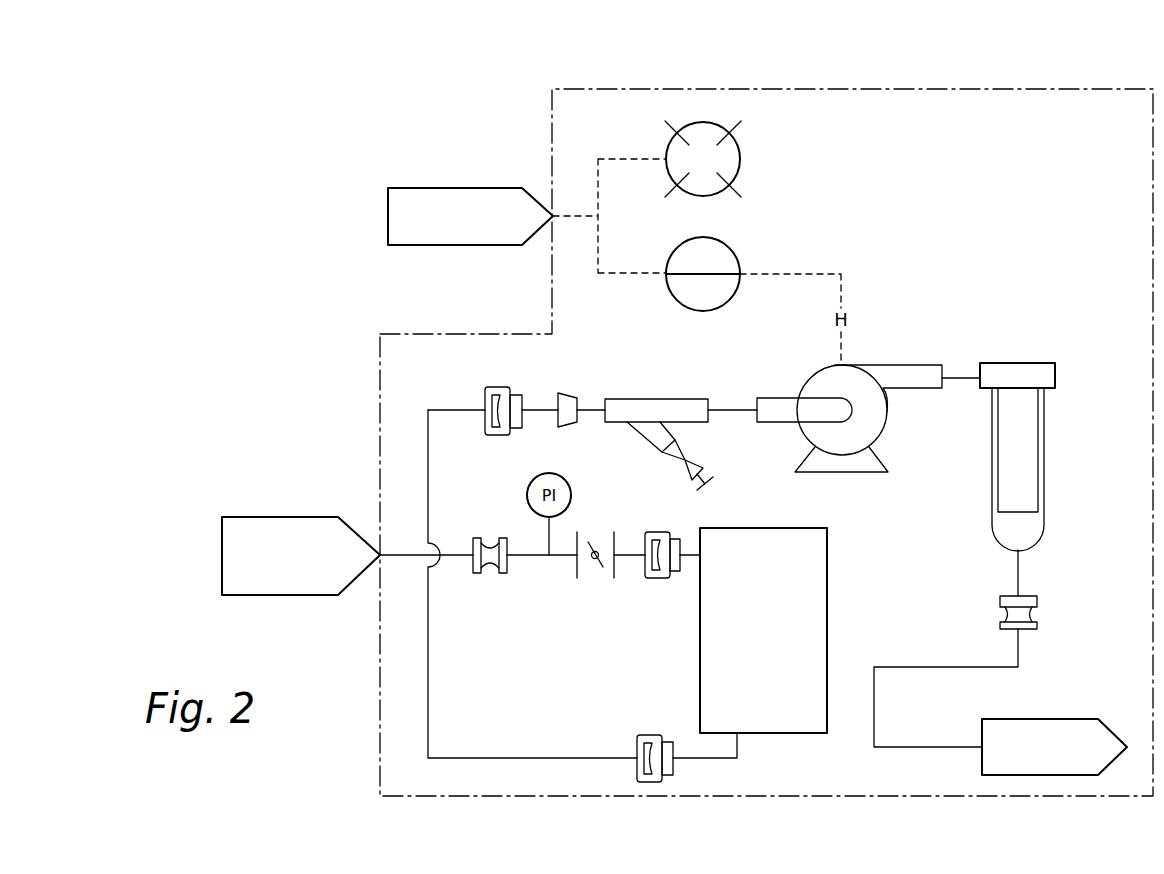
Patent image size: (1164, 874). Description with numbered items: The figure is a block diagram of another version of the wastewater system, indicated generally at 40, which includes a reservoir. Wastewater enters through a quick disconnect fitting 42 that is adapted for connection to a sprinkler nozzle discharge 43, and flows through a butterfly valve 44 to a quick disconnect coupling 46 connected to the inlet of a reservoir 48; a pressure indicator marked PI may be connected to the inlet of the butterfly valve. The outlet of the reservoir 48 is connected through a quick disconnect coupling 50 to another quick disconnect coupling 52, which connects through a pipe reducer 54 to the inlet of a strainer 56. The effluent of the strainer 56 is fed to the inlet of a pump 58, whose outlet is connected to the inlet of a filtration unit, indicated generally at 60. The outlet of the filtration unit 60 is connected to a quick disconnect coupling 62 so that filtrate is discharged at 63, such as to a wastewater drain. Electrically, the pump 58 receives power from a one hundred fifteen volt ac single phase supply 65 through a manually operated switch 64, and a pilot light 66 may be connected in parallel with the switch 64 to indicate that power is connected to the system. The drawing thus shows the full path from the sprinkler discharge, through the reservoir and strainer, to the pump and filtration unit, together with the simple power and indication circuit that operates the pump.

The system 40 is at (1047, 91).
The quick disconnect fitting 42 is at (497, 538).
The sprinkler nozzle discharge 43 is at (270, 517).
The butterfly valve 44 is at (596, 572).
The quick disconnect coupling 46 is at (664, 578).
The reservoir 48 is at (827, 567).
The quick disconnect coupling 50 is at (648, 735).
The quick disconnect coupling 52 is at (500, 387).
The pipe reducer 54 is at (567, 398).
The strainer 56 is at (670, 399).
The pump 58 is at (905, 364).
The filtration unit 60 is at (1025, 362).
The quick disconnect coupling 62 is at (1037, 602).
The filtrate discharge 63 is at (1053, 719).
The manually operated switch 64 is at (735, 250).
The 115 volts ac single phase supply 65 is at (440, 188).
The pilot light 66 is at (740, 159).